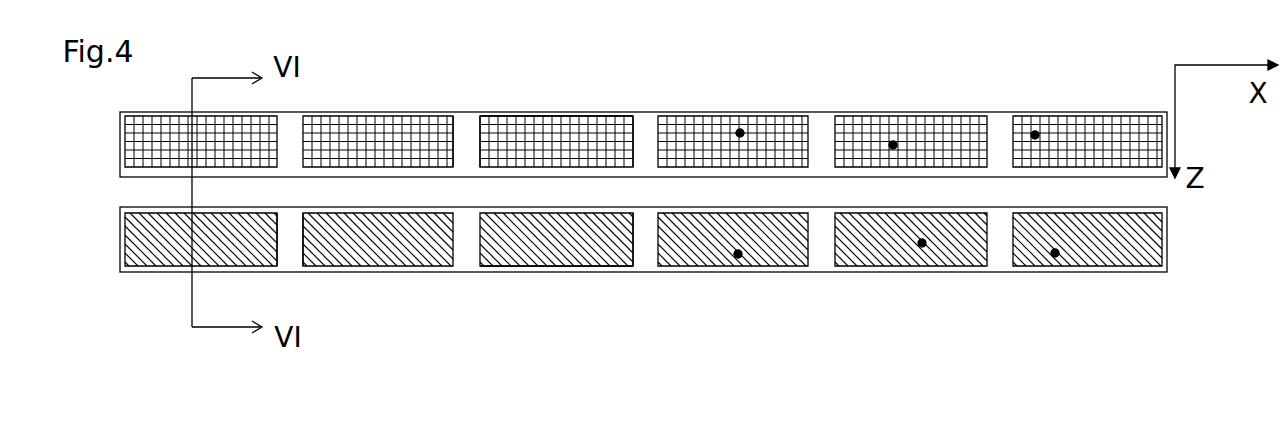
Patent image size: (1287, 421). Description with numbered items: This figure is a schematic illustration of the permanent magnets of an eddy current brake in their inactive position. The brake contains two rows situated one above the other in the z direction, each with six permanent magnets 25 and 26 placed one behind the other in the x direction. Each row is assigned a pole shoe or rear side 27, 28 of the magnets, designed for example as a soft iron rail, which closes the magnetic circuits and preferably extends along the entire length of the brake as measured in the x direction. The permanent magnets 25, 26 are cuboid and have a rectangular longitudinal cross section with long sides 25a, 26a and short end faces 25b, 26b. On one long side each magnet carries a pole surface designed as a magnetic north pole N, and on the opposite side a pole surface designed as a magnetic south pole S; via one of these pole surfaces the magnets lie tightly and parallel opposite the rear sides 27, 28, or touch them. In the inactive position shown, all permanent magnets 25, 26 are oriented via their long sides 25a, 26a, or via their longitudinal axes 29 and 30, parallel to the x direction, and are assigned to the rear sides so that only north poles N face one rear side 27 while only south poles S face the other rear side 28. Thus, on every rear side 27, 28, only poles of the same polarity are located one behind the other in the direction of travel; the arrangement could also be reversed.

The permanent magnet 25 is at (405, 145).
The long side 25a is at (528, 117).
The short end face 25b is at (633, 133).
The permanent magnet 26 is at (517, 242).
The long side 26a is at (560, 267).
The short end face 26b is at (631, 245).
The rear side of magnets 27 is at (467, 143).
The rear side of magnets 28 is at (292, 232).
The longitudinal axis 29 is at (455, 142).
The longitudinal axis 30 is at (295, 240).
The magnetic south pole S is at (1035, 135).
The magnetic north pole N is at (738, 254).